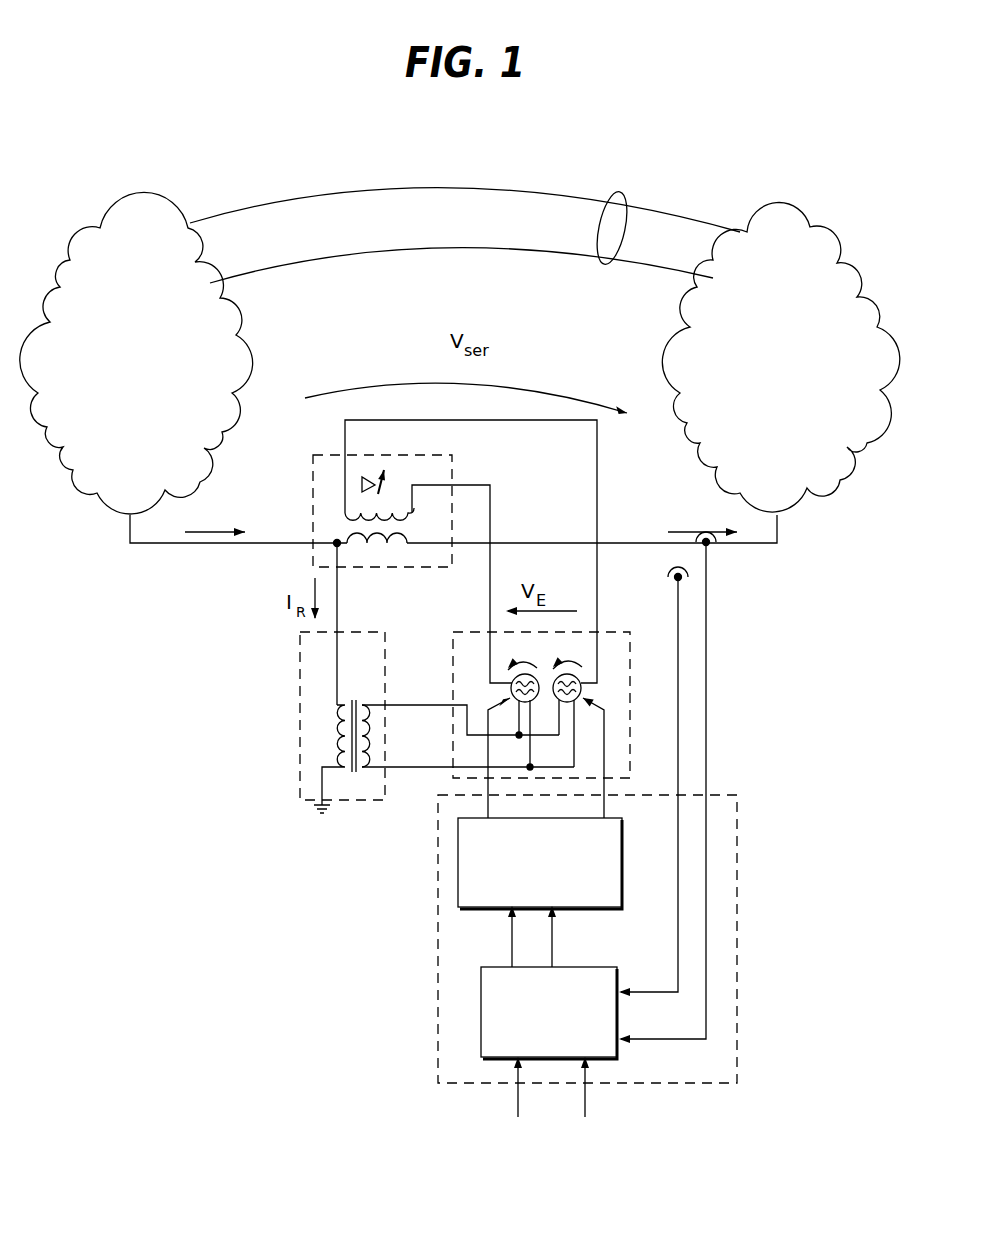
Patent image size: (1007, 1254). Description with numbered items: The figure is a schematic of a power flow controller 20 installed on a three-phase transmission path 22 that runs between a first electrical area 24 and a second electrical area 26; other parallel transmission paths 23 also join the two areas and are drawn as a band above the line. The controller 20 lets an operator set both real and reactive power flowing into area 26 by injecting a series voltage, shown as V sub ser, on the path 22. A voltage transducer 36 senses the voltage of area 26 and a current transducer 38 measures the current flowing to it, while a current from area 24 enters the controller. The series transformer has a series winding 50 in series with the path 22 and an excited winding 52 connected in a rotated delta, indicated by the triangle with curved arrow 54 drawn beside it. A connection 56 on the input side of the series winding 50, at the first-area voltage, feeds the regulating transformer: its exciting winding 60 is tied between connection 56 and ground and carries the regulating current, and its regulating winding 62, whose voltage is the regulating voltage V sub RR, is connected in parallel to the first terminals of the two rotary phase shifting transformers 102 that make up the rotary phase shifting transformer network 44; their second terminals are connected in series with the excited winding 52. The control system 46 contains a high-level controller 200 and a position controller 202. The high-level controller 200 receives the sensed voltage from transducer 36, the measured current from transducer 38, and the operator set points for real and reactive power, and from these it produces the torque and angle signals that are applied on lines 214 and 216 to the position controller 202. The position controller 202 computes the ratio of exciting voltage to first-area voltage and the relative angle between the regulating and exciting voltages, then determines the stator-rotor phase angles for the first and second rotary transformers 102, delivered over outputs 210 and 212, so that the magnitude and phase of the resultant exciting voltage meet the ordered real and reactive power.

The power flow controller 20 is at (815, 600).
The transmission path 22 is at (237, 545).
The parallel transmission paths 23 is at (628, 200).
The first electrical area 24 is at (72, 427).
The second electrical area 26 is at (835, 483).
The voltage transducer 36 is at (672, 578).
The current transducer 38 is at (710, 547).
The rotary phase shifting transformer network 44 is at (630, 730).
The control system 46 is at (313, 470).
The series winding 50 is at (378, 546).
The excited winding 52 is at (471, 551).
The triangle with curved arrow 54 is at (375, 495).
The connection 56 is at (336, 541).
The exciting winding 60 is at (341, 755).
The regulating winding 62 is at (366, 768).
The rotary phase shifting transformer 102 is at (623, 621).
The high-level controller 200 is at (480, 1038).
The position controller 202 is at (458, 892).
The position angle signal theta E1 210 is at (488, 787).
The position angle signal theta E2 212 is at (605, 793).
The line 214 is at (508, 950).
The line 216 is at (555, 934).